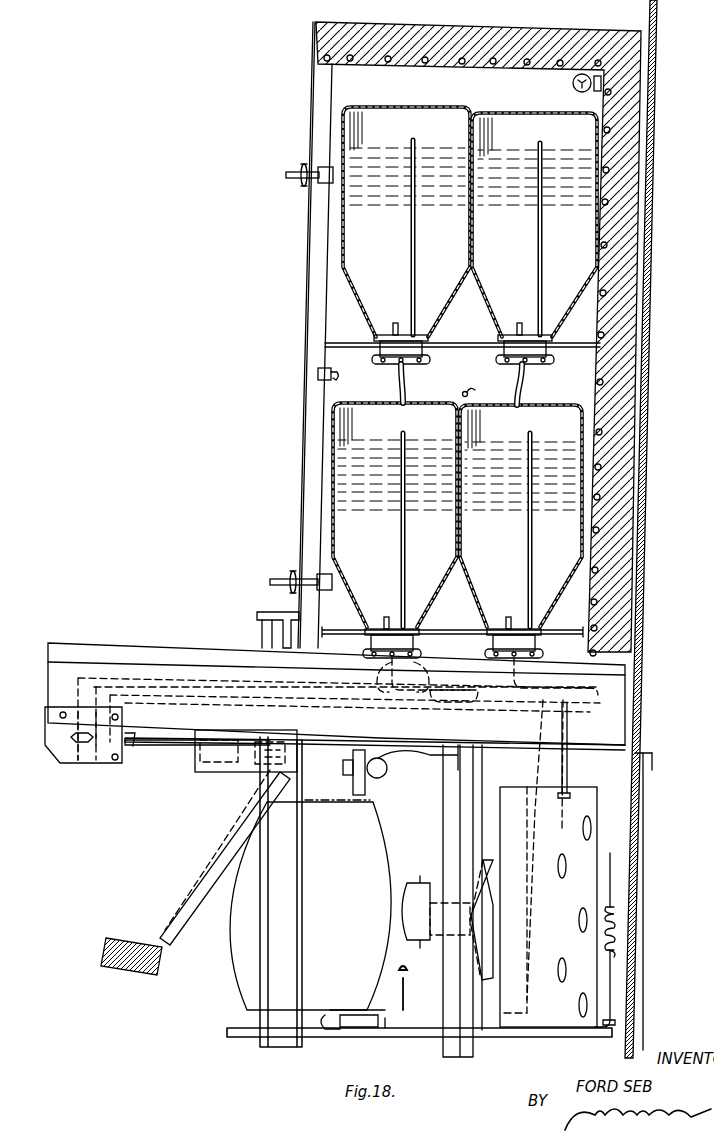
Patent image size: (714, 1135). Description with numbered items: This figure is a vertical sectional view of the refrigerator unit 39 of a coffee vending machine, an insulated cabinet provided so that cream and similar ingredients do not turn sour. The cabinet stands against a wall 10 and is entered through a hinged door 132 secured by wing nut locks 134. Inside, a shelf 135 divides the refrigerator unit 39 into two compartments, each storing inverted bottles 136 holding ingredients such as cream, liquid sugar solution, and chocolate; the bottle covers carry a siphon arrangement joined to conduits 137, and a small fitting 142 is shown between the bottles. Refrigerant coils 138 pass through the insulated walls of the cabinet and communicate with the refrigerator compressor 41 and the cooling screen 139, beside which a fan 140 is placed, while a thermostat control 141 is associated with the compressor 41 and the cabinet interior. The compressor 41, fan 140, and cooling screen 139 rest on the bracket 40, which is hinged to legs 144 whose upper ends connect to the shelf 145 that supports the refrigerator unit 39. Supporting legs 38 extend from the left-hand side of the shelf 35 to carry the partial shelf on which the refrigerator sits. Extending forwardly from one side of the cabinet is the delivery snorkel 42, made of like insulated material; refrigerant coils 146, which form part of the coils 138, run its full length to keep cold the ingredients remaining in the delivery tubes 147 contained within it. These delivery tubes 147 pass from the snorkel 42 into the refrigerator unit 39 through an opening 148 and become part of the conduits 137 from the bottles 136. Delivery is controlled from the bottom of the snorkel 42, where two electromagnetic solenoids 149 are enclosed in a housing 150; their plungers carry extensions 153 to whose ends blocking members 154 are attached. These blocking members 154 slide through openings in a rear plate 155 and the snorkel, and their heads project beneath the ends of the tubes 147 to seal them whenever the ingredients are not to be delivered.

The wall 10 is at (641, 428).
The refrigerator unit 39 is at (465, 19).
The door 132 is at (302, 347).
The wing nut locks 134 is at (300, 172).
The shelf 135 is at (356, 341).
The bottles 136 is at (442, 310).
The conduits 137 is at (388, 396).
The refrigerant coils 138 is at (601, 381).
The hook 142 is at (486, 395).
The delivery snorkel 42 is at (153, 654).
The shelf 145 is at (610, 737).
The refrigerant coils 146 is at (193, 697).
The delivery tubes 147 is at (108, 677).
The opening 148 is at (422, 666).
The blocking members 154 is at (103, 763).
The extensions 153 is at (168, 742).
The rear plate 155 is at (127, 748).
The housing 150 is at (232, 774).
The electromagnetic solenoids 149 is at (228, 823).
The supporting legs 38 is at (196, 886).
The shelf 35 is at (126, 978).
The legs 144 is at (455, 799).
The refrigerator compressor 41 is at (310, 905).
The bracket 40 is at (385, 1034).
The cooling screen 139 is at (576, 810).
The fan 140 is at (476, 860).
The thermostat control 141 is at (378, 771).